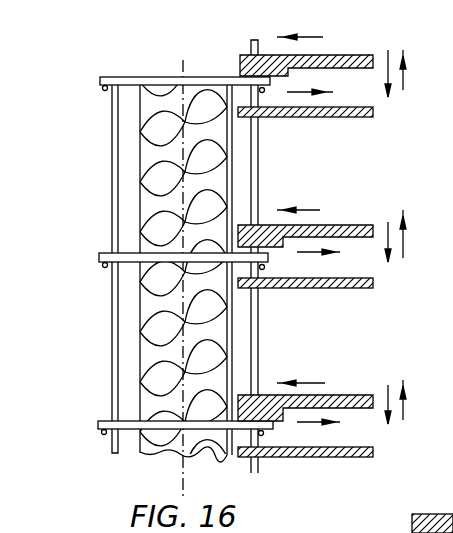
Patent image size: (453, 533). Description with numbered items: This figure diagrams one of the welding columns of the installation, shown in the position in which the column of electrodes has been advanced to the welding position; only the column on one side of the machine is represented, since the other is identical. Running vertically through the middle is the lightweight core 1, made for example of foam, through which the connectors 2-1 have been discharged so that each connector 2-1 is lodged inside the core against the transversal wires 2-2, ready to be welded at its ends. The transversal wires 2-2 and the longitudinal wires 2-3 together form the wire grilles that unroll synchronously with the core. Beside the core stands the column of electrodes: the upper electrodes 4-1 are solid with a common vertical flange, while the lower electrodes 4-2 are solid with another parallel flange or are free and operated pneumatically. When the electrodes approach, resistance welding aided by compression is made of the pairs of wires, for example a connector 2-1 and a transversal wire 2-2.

The lightweight core 1 is at (180, 443).
The connectors 2-1 is at (165, 82).
The transversal wires 2-2 is at (103, 88).
The longitudinal wires 2-3 is at (110, 400).
The upper electrodes 4-1 is at (352, 64).
The lower electrodes 4-2 is at (320, 110).